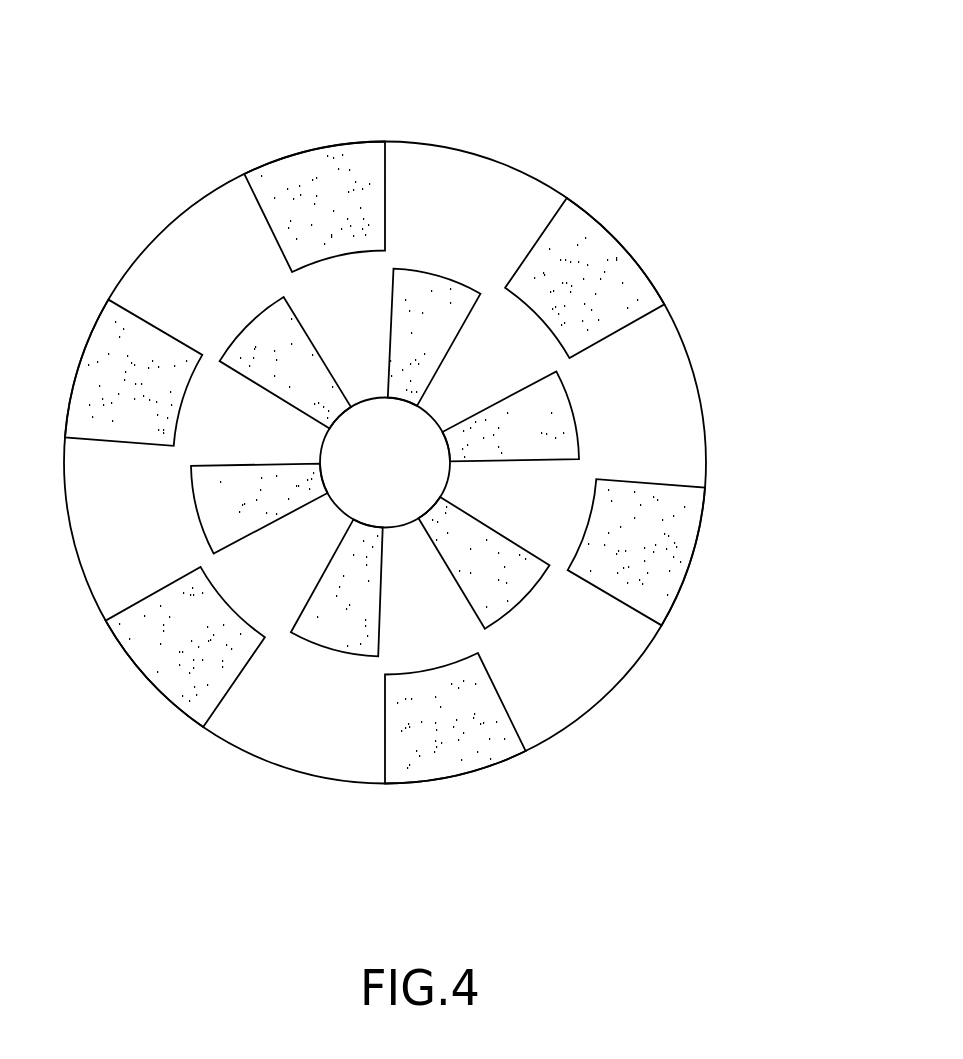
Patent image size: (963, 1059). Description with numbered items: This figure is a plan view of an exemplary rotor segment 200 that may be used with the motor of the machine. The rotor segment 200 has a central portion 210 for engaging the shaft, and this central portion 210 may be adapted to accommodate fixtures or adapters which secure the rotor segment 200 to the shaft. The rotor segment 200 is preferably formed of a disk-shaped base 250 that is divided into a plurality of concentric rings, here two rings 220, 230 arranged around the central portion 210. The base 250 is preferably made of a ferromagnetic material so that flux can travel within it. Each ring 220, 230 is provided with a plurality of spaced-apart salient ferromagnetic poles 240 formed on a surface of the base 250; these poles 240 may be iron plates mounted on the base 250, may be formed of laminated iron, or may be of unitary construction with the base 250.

The rotor segment 200 is at (480, 122).
The central portion 210 is at (402, 458).
The ring 220 is at (300, 155).
The ring 230 is at (245, 327).
The ferromagnetic poles 240 is at (658, 547).
The disk-shaped base 250 is at (577, 675).